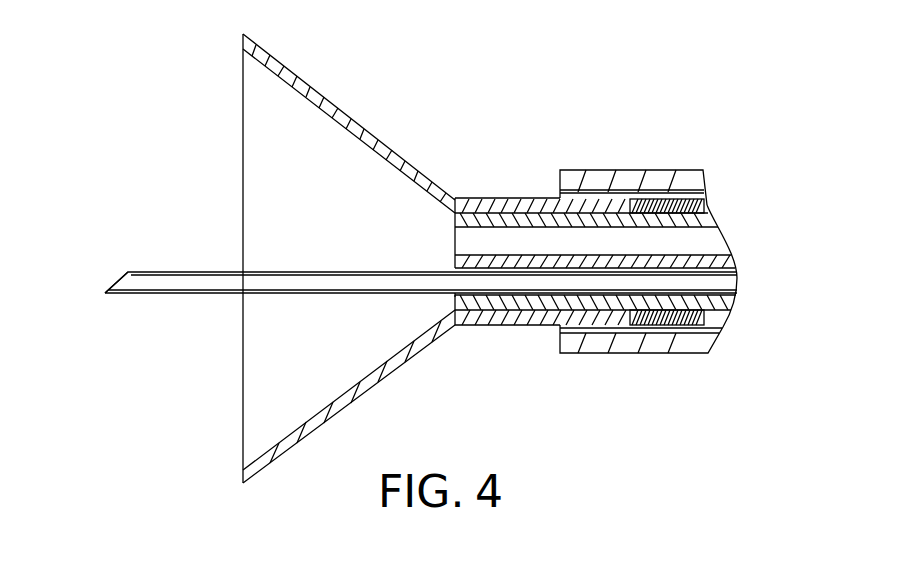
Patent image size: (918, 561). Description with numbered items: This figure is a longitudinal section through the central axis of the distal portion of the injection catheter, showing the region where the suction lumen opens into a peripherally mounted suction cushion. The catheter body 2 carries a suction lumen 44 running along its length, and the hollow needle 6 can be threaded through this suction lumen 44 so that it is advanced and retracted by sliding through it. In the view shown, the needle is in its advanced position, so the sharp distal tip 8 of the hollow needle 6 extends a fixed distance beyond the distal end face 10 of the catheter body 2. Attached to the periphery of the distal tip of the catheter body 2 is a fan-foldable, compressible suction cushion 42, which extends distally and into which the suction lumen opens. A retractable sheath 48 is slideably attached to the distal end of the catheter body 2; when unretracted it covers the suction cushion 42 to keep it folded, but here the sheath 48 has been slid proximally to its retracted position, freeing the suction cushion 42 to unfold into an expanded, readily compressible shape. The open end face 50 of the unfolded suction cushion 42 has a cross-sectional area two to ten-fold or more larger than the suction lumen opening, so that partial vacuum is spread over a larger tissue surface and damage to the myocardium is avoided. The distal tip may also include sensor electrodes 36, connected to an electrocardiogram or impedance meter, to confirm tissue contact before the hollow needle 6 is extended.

The catheter body 2 is at (706, 207).
The hollow needle 6 is at (180, 294).
The sharp distal tip 8 is at (126, 274).
The distal end face 10 is at (457, 297).
The sensor electrodes 36 is at (733, 303).
The suction cushion 42 is at (333, 102).
The suction lumen 44 is at (720, 240).
The retractable sheath 48 is at (630, 170).
The open end face 50 is at (242, 145).